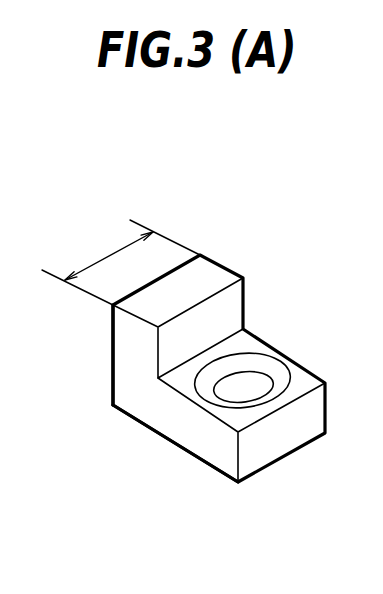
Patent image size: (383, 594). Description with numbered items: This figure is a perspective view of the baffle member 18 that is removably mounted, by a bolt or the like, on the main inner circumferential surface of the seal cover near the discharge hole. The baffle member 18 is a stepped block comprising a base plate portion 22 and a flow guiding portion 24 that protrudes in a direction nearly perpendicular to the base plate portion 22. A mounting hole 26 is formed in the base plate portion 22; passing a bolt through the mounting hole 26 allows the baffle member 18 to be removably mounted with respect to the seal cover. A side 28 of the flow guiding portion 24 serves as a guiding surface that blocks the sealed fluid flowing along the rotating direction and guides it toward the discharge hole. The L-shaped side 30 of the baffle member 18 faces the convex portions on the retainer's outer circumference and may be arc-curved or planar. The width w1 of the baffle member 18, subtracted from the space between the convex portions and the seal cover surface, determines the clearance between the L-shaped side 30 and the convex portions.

The baffle member 18 is at (177, 452).
The base plate portion 22 is at (282, 438).
The flow guiding portion 24 is at (205, 278).
The mounting hole 26 is at (268, 390).
The side of the flow guiding portion 28 is at (113, 352).
The L-shaped side 30 is at (147, 400).
The width of the baffle member w1 is at (121, 262).